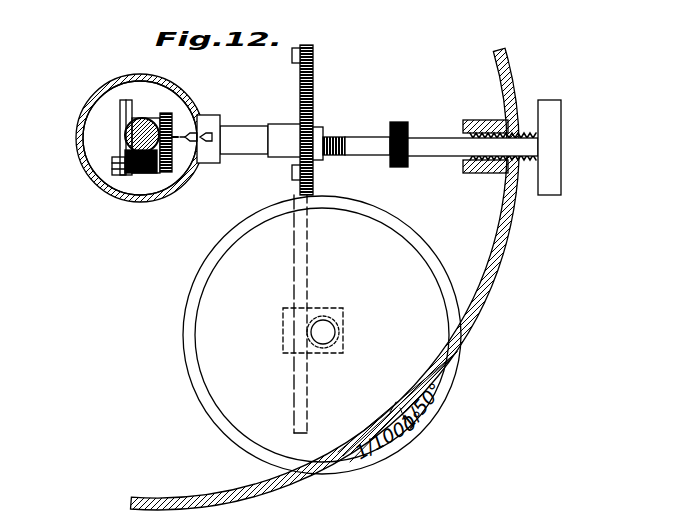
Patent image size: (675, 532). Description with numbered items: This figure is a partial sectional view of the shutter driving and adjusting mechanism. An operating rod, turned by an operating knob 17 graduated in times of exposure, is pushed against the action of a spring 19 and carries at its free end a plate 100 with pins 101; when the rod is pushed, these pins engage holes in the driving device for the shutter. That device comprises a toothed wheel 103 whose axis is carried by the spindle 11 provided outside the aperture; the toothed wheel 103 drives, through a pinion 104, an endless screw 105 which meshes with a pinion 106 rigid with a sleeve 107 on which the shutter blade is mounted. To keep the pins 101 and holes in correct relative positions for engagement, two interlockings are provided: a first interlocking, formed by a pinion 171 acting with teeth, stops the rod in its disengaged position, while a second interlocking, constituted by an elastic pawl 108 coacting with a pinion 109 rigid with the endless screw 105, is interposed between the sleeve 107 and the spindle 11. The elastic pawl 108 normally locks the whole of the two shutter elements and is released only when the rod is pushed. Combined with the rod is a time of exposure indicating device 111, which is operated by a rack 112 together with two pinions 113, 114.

The spindle 11 is at (120, 114).
The operating knob 17 is at (548, 108).
The spring 19 is at (524, 165).
The plate 100 is at (212, 121).
The pins 101 is at (210, 148).
The toothed wheel 103 is at (167, 112).
The pinion 104 is at (170, 174).
The endless screw 105 is at (130, 176).
The pinion 106 is at (116, 148).
The sleeve 107 is at (125, 133).
The elastic pawl 108 is at (118, 122).
The pinion 109 is at (115, 167).
The time of exposure indicating device 111 is at (391, 217).
The rack 112 is at (314, 181).
The pinion 113 is at (333, 135).
The pinion 114 is at (336, 311).
The pinion 171 is at (407, 127).